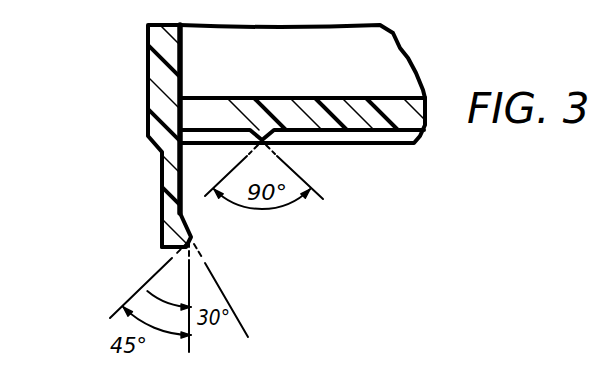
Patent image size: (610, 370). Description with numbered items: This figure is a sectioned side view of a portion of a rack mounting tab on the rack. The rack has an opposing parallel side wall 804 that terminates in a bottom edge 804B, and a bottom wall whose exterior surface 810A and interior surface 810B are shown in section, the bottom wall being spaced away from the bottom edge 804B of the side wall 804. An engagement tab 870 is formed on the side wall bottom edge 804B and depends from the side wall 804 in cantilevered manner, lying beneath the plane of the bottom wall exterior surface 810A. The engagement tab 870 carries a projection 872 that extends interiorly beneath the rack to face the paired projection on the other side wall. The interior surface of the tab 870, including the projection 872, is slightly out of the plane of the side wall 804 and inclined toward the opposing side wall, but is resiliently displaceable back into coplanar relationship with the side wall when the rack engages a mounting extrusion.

The side wall 804 is at (152, 60).
The bottom edge 804B is at (166, 248).
The exterior surface 810A is at (362, 150).
The interior surface 810B is at (360, 97).
The engagement tab 870 is at (141, 187).
The projection 872 is at (269, 259).